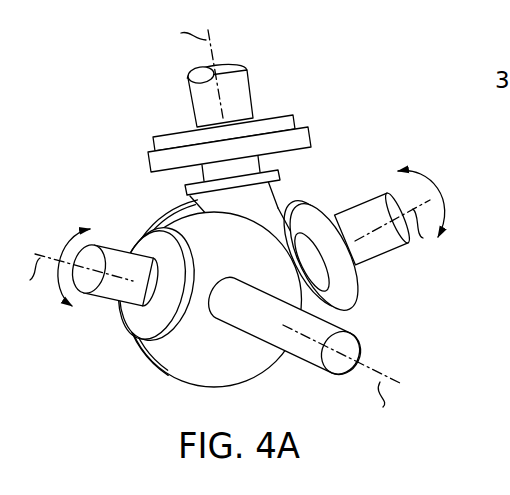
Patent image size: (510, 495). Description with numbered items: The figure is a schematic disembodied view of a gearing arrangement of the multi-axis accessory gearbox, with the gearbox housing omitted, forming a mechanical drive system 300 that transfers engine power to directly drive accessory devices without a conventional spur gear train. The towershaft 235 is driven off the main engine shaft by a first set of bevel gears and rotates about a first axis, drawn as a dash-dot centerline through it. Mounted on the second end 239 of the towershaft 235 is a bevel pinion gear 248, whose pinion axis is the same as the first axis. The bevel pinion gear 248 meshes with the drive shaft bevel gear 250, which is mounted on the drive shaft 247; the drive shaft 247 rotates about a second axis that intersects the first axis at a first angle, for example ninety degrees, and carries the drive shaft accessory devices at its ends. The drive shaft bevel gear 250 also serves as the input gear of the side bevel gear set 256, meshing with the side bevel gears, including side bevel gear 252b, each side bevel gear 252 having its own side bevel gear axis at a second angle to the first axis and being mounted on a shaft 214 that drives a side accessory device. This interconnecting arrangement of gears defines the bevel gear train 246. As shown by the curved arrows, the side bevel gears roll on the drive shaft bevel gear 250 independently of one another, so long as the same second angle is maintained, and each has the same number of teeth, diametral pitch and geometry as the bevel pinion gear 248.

The mechanical drive system 300 is at (143, 88).
The towershaft 235 is at (248, 74).
The second end 239 is at (261, 119).
The bevel gear train 246 is at (295, 192).
The bevel pinion gear 248 is at (185, 192).
The drive shaft bevel gear 250 is at (165, 371).
The side bevel gear 252 is at (142, 329).
The side bevel gear 252b is at (360, 278).
The side bevel gear set 256 is at (163, 224).
The shaft 214 is at (72, 248).
The drive shaft 247 is at (280, 348).